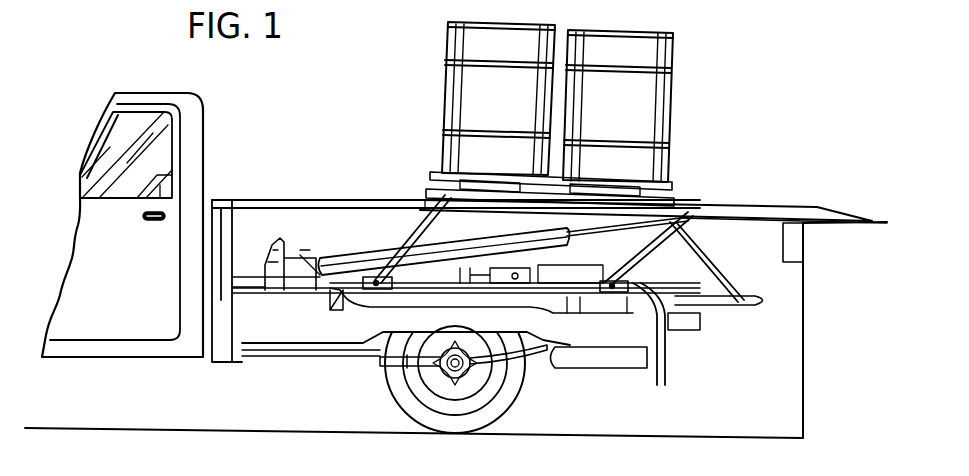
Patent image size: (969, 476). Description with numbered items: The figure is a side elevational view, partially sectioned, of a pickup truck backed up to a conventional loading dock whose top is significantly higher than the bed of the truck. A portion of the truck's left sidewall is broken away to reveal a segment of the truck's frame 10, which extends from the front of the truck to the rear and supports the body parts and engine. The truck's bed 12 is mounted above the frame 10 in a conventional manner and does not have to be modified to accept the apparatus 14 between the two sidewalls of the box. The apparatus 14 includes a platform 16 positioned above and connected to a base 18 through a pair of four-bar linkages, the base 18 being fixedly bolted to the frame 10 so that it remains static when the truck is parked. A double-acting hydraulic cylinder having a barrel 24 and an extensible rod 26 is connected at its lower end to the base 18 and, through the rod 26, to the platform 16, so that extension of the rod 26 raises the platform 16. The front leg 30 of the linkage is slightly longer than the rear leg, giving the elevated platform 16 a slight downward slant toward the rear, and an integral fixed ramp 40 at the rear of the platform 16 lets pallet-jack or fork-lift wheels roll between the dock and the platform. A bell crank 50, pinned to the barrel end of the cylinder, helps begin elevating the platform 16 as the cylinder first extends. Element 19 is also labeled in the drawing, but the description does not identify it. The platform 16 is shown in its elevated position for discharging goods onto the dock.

The frame 10 is at (311, 330).
The bed 12 is at (657, 372).
The apparatus 14 is at (329, 235).
The platform 16 is at (733, 200).
The base 18 is at (240, 202).
The frame bracket 19 is at (343, 300).
The barrel 24 is at (383, 245).
The extensible rod 26 is at (712, 226).
The front leg 30 is at (418, 200).
The ramp 40 is at (860, 190).
The bell crank 50 is at (287, 246).